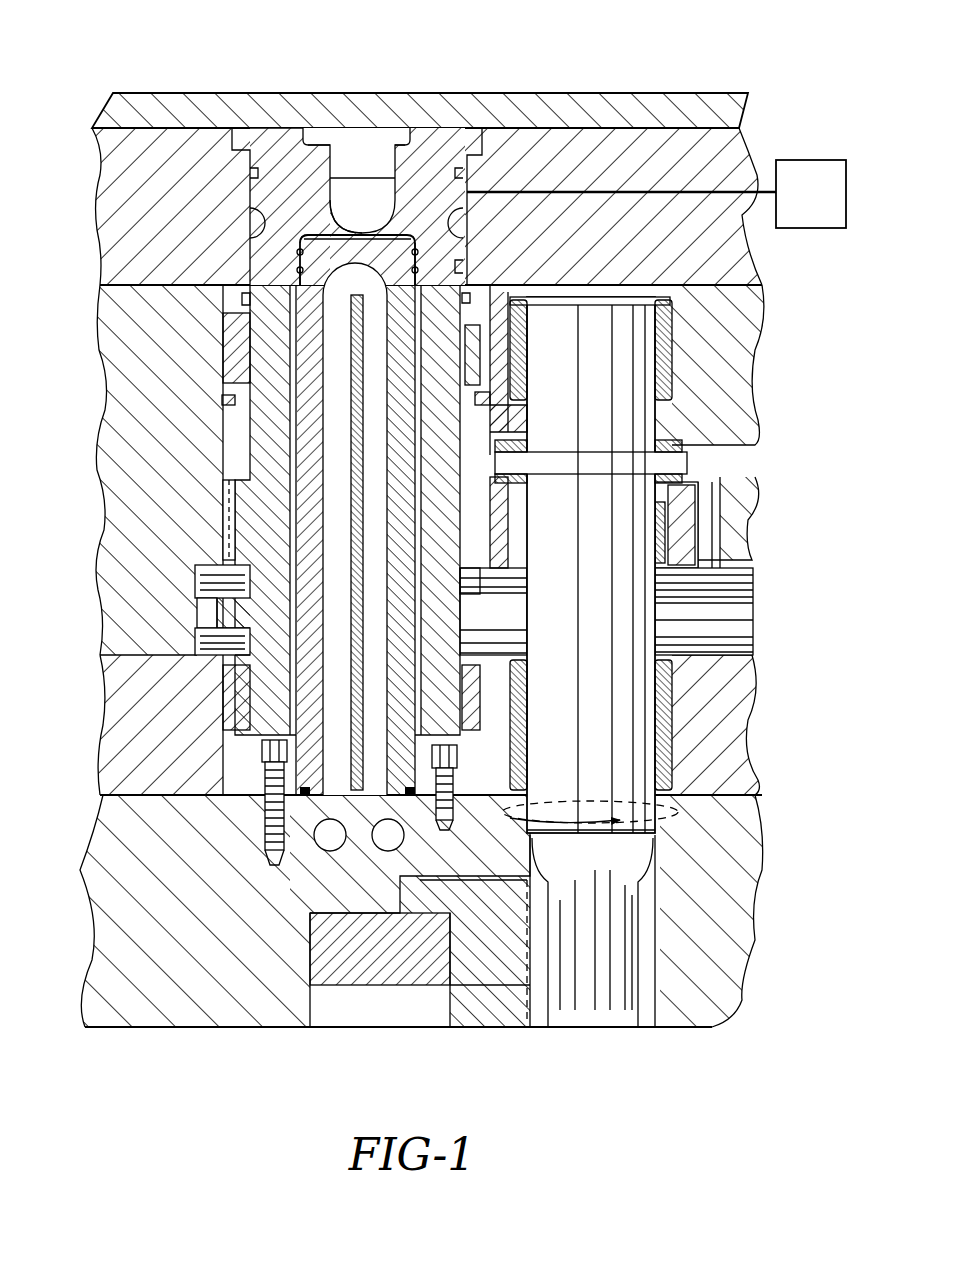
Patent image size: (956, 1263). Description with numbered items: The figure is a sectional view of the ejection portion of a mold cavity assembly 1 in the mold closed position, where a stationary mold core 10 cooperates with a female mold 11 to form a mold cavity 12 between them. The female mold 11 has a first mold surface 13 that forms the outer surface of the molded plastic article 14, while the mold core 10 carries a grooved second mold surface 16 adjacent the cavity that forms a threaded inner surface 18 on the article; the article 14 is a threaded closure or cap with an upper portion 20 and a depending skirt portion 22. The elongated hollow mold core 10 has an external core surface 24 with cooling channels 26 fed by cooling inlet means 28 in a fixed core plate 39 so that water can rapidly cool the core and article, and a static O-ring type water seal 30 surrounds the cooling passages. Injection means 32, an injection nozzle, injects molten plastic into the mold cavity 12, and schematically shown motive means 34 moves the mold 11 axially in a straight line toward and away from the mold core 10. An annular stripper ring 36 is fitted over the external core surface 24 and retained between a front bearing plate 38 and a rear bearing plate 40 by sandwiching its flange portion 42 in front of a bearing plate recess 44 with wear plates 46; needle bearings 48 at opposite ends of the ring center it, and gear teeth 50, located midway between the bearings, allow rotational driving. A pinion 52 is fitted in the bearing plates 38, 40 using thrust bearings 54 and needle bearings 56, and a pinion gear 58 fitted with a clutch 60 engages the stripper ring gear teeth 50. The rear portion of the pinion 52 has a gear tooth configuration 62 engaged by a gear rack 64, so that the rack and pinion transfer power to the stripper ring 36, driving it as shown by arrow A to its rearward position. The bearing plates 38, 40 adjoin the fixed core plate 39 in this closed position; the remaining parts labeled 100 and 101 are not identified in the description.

The mold cavity assembly 1 is at (148, 367).
The mold core 10 is at (400, 292).
The female mold 11 is at (277, 127).
The mold cavity 12 is at (300, 248).
The first mold surface 13 is at (293, 237).
The molded plastic article 14 is at (418, 110).
The grooved second mold surface 16 is at (445, 185).
The threaded inner surface 18 is at (300, 284).
The upper portion 20 is at (330, 212).
The skirt portion 22 is at (413, 253).
The external core surface 24 is at (295, 413).
The cooling channels 26 is at (418, 842).
The cooling inlet means 28 is at (388, 852).
The static O-ring type water seal 30 is at (313, 797).
The injection means 32 is at (380, 190).
The motive means 34 is at (795, 212).
The annular stripper ring 36 is at (265, 453).
The front bearing plate 38 is at (140, 441).
The fixed core plate 39 is at (145, 983).
The rear bearing plate 40 is at (115, 777).
The flange portion 42 is at (235, 618).
The bearing plate recess 44 is at (215, 624).
The wear plates 46 is at (200, 584).
The needle bearing 48 is at (238, 349).
The gear teeth 50 is at (240, 529).
The pinion 52 is at (628, 345).
The thrust bearings 54 is at (687, 476).
The needle bearings 56 is at (672, 362).
The pinion gear 58 is at (690, 550).
The clutch 60 is at (658, 537).
The gear tooth configuration 62 is at (648, 932).
The gear rack 64 is at (492, 1000).
The manifold 100 is at (725, 150).
The backing plate 101 is at (712, 100).
The arrow A is at (590, 812).